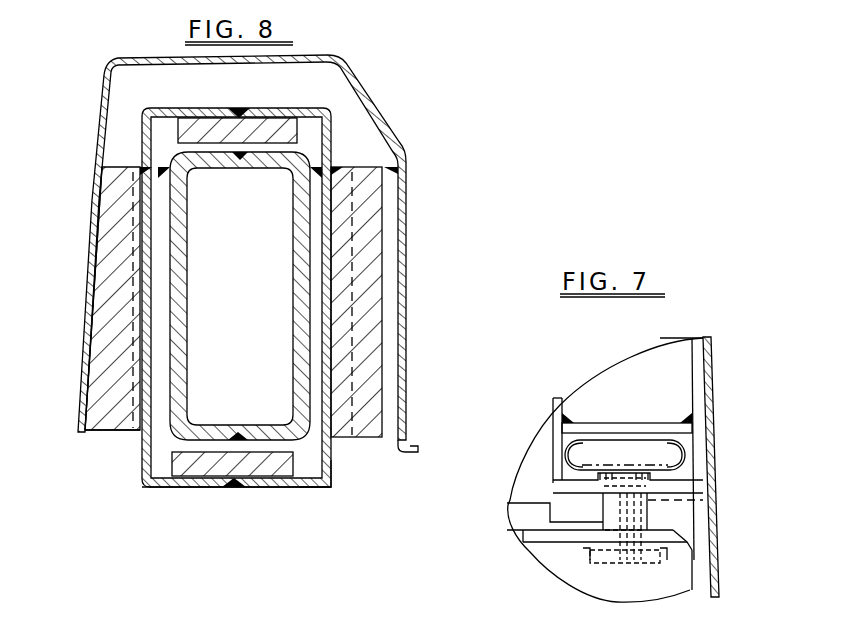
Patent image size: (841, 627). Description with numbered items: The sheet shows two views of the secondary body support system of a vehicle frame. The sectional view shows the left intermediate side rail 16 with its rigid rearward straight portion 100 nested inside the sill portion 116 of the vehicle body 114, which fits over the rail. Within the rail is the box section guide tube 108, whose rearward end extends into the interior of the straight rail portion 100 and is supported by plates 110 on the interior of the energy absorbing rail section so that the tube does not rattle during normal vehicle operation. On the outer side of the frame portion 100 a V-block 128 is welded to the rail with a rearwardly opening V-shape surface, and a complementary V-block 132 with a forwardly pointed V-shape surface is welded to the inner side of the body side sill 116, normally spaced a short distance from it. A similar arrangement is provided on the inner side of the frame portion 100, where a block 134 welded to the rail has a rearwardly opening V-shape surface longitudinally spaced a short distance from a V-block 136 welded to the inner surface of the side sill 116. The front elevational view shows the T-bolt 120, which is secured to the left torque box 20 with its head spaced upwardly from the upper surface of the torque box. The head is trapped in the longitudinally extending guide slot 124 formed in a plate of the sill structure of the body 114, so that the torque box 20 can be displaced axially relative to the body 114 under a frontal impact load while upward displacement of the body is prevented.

In FIG. 8, the sill portion 116 is at (396, 138).
In FIG. 8, the plates 110 is at (273, 128).
In FIG. 8, the V-block 136 is at (96, 238).
In FIG. 8, the block 134 is at (104, 433).
In FIG. 8, the V-block 128 is at (340, 443).
In FIG. 8, the box section guide tube 108 is at (193, 432).
In FIG. 8, the V-block 132 is at (384, 414).
In FIG. 8, the rearward straight portion 100 is at (327, 489).
In FIG. 8, the left intermediate side rail 16 is at (163, 496).
In FIG. 7, the vehicle body 114 is at (718, 393).
In FIG. 7, the T-bolt 120 is at (680, 456).
In FIG. 7, the guide slot 124 is at (703, 500).
In FIG. 7, the left torque box 20 is at (553, 541).